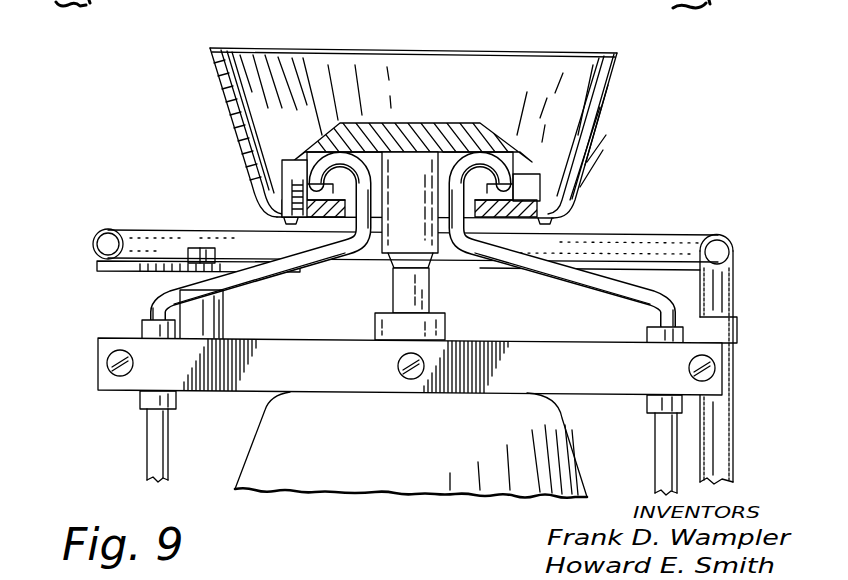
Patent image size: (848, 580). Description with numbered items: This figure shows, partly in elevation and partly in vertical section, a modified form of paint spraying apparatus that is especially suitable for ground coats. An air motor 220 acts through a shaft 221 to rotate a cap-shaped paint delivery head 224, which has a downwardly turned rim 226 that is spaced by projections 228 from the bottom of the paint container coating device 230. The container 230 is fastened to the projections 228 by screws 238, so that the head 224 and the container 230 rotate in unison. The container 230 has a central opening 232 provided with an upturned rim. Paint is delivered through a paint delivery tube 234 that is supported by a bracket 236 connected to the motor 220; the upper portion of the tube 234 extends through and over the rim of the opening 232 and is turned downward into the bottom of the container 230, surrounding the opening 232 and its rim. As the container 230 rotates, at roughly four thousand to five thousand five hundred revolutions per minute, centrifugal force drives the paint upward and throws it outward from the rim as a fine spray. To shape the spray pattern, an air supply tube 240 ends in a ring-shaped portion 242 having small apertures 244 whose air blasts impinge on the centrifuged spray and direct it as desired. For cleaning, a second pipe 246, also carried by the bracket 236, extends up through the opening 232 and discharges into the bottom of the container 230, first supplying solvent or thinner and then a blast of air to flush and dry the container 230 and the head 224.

The air motor 220 is at (540, 437).
The shaft 221 is at (418, 298).
The cap-shaped paint delivery head 224 is at (401, 135).
The downwardly turned rim 226 is at (554, 197).
The projections 228 is at (278, 192).
The paint container coating device 230 is at (592, 129).
The central opening 232 is at (379, 230).
The paint delivery tube 234 is at (150, 432).
The bracket 236 is at (256, 378).
The screws 238 is at (290, 224).
The air supply tube 240 is at (716, 434).
The ring-shaped portion 242 is at (162, 232).
The small apertures 244 is at (108, 231).
The second pipe 246 is at (622, 286).